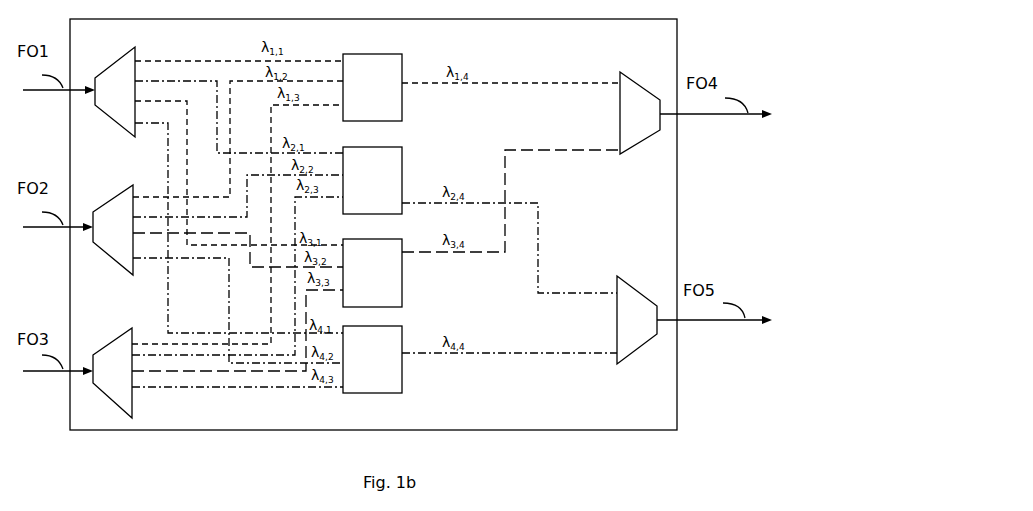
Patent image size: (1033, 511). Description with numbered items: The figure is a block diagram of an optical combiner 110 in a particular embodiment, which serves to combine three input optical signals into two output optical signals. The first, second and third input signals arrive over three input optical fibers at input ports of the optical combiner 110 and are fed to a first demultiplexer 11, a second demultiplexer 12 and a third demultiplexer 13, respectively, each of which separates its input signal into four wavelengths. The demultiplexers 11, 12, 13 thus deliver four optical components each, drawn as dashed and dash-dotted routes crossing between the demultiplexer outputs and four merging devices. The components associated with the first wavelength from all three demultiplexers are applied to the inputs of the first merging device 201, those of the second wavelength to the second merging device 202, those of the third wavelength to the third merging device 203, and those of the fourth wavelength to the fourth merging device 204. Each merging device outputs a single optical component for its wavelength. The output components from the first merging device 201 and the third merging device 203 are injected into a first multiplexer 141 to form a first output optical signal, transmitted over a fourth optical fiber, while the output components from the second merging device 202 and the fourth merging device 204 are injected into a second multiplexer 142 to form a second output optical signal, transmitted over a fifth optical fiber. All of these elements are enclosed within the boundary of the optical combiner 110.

The optical combiner 110 is at (545, 431).
The first demultiplexer 11 is at (125, 53).
The second demultiplexer 12 is at (125, 191).
The third demultiplexer 13 is at (125, 331).
The first merging device 201 is at (372, 52).
The second merging device 202 is at (372, 146).
The third merging device 203 is at (372, 238).
The fourth merging device 204 is at (372, 325).
The first multiplexer 141 is at (624, 158).
The second multiplexer 142 is at (618, 364).